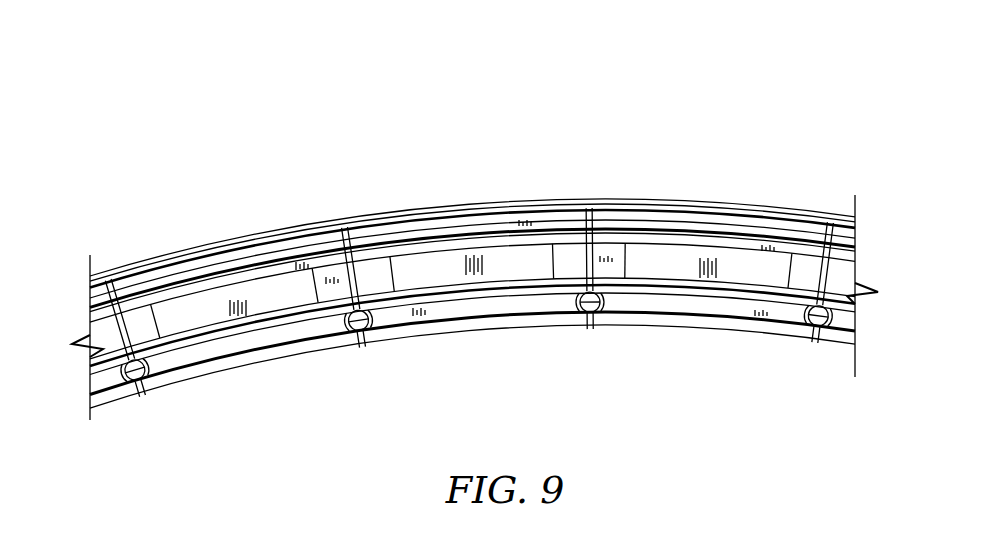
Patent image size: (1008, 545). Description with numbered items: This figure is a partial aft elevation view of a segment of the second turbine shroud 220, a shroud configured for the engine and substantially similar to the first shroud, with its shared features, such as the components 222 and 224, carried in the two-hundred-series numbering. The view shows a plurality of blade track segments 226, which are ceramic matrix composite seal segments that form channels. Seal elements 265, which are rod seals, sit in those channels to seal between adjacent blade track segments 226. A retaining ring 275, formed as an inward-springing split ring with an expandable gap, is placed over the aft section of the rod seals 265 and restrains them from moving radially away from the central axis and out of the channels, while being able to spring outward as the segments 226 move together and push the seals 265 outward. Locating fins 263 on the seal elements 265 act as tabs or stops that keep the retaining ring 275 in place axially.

The turbine shroud 220 is at (475, 261).
The rail 222 is at (472, 270).
The upper rail 224 is at (245, 224).
The blade track segments 226 is at (227, 389).
The locating fins 263 is at (151, 346).
The seal elements 265 is at (131, 401).
The retaining ring 275 is at (401, 289).